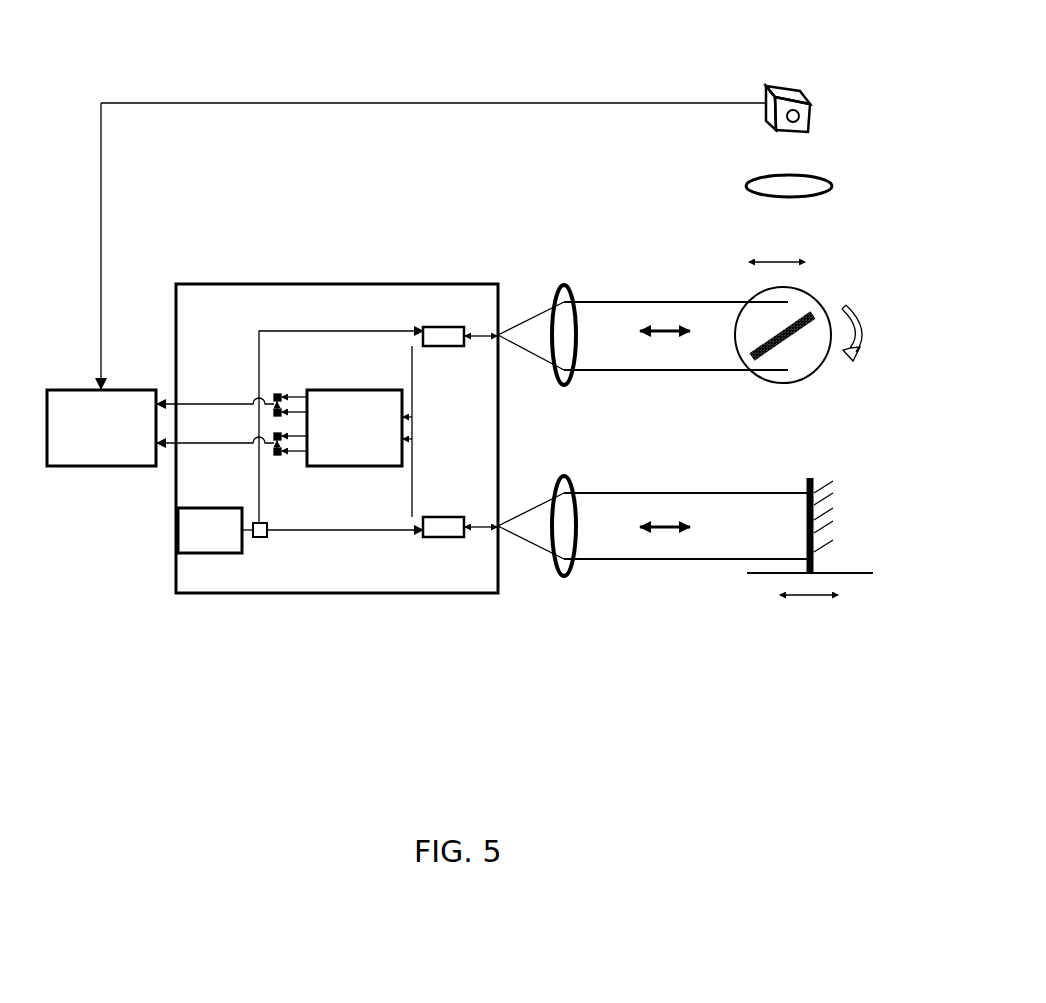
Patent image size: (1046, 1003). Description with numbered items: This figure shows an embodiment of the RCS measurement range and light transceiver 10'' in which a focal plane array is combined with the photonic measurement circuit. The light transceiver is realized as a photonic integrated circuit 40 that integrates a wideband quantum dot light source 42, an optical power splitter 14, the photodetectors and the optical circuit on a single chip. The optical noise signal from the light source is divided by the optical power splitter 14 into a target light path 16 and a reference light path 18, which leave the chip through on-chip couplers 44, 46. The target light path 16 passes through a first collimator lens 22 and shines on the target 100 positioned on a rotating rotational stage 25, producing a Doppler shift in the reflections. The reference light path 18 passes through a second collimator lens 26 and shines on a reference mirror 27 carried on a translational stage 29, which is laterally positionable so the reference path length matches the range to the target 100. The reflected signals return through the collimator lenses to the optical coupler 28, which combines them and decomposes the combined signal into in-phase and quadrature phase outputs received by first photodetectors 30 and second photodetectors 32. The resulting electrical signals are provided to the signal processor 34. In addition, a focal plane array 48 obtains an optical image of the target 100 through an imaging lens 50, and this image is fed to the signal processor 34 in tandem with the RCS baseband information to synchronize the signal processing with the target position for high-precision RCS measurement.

The light transceiver 10'' is at (237, 30).
The optical power splitter 14 is at (260, 540).
The target light path 16 is at (296, 331).
The reference light path 18 is at (372, 535).
The first collimator lens 22 is at (564, 290).
The rotational stage 25 is at (818, 370).
The second collimator lens 26 is at (564, 576).
The reference mirror 27 is at (820, 505).
The optical coupler 28 is at (353, 468).
The translational stage 29 is at (865, 574).
The first photodetectors 30 is at (279, 396).
The second photodetectors 32 is at (279, 456).
The signal processor 34 is at (47, 428).
The photonic integrated circuit 40 is at (340, 594).
The wideband quantum dot light source 42 is at (176, 530).
The on-chip coupler 44 is at (445, 327).
The on-chip coupler 46 is at (447, 537).
The focal plane array 48 is at (812, 115).
The imaging lens 50 is at (832, 185).
The target 100 is at (797, 315).